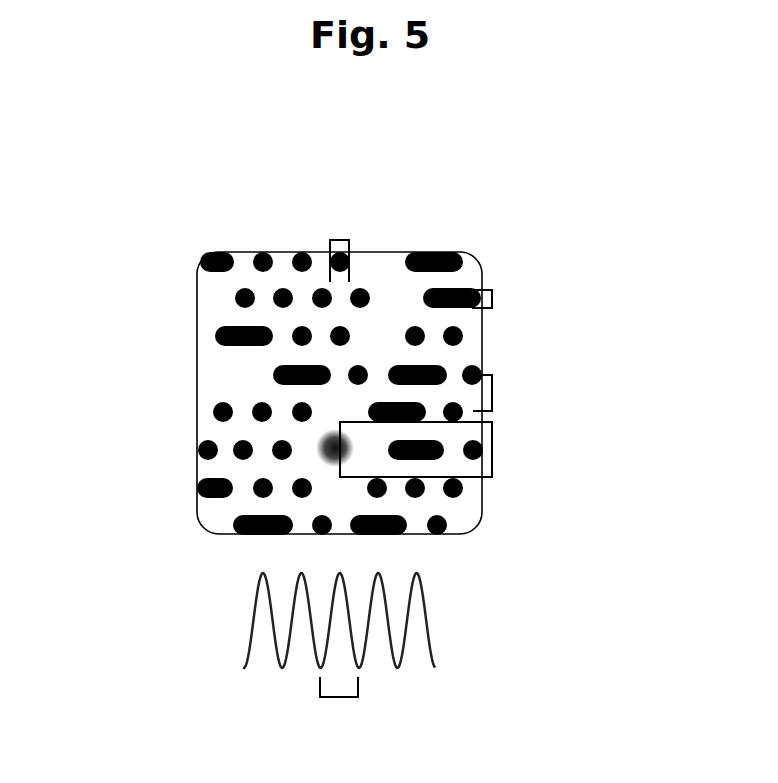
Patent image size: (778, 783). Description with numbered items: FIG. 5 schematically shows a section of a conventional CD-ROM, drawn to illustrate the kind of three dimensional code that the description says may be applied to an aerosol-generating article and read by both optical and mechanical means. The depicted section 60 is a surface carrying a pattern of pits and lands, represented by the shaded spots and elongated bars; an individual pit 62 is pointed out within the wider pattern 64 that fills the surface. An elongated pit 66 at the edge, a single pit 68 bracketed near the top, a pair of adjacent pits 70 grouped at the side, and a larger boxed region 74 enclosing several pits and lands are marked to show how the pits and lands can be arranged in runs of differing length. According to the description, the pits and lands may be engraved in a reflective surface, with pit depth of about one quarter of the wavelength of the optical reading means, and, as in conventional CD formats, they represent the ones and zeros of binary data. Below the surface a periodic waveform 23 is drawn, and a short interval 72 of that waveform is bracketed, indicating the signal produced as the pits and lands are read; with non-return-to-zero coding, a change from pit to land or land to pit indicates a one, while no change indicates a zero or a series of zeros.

The vibration sensing tile 60 is at (213, 515).
The sensing element 62 is at (208, 450).
The array of sensing elements 64 is at (213, 372).
The elongated sensing element 66 is at (492, 300).
The sensing element under bracket 68 is at (349, 240).
The grouped sensing elements 70 is at (492, 393).
The region of sensing elements 74 is at (492, 463).
The vibration signal waveform 23 is at (437, 630).
The signal period 72 is at (358, 688).